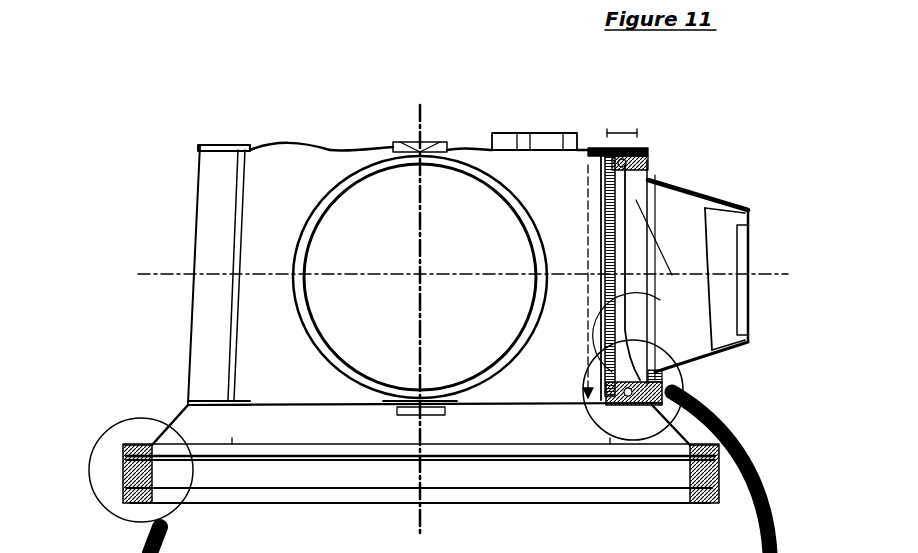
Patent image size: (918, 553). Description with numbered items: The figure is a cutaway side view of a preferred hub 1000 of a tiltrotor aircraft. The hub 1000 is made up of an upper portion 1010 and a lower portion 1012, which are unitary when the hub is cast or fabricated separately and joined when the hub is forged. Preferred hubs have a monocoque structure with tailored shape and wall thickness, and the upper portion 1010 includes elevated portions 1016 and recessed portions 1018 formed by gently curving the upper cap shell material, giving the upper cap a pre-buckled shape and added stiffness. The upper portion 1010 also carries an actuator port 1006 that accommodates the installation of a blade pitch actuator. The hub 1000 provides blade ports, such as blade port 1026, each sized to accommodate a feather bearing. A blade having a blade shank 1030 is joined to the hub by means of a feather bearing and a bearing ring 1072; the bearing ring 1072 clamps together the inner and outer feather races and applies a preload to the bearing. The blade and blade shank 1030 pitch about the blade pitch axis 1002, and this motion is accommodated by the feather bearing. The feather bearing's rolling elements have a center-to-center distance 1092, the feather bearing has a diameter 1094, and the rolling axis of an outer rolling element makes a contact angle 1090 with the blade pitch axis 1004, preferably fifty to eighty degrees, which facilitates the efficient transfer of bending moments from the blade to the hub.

The hub 1000 is at (168, 98).
The blade pitch axis 1002 is at (418, 108).
The blade pitch axis 1004 is at (778, 268).
The actuator port 1006 is at (530, 132).
The upper portion 1010 is at (462, 142).
The lower portion 1012 is at (152, 445).
The elevated portions 1016 is at (268, 142).
The recessed portions 1018 is at (331, 146).
The blade port 1026 is at (198, 194).
The blade shank 1030 is at (700, 184).
The bearing ring 1072 is at (648, 150).
The contact angle 1090 is at (652, 282).
The center-to-center distance 1092 is at (634, 130).
The diameter 1094 is at (600, 325).